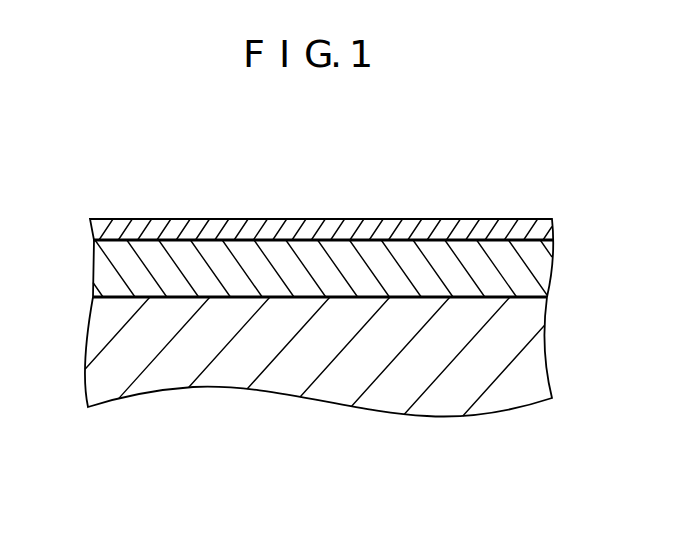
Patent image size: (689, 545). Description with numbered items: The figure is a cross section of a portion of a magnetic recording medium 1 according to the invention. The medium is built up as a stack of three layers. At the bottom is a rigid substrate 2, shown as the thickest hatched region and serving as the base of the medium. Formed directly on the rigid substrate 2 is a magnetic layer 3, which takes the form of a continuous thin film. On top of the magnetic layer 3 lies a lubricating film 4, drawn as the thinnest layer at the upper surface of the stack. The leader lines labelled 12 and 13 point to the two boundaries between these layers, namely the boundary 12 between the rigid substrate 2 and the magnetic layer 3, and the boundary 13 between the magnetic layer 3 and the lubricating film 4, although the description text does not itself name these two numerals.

The magnetic recording medium 1 is at (370, 185).
The rigid substrate 2 is at (335, 390).
The magnetic layer 3 is at (545, 267).
The lubricating film 4 is at (452, 230).
The interface between substrate and intermediate layer 12 is at (122, 294).
The interface between intermediate layer and surface layer 13 is at (105, 240).